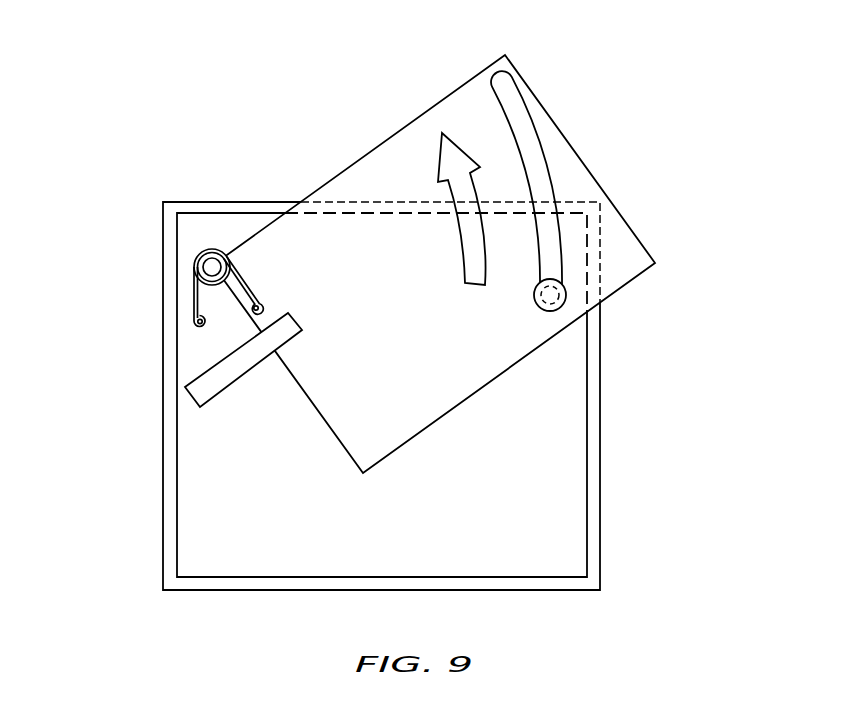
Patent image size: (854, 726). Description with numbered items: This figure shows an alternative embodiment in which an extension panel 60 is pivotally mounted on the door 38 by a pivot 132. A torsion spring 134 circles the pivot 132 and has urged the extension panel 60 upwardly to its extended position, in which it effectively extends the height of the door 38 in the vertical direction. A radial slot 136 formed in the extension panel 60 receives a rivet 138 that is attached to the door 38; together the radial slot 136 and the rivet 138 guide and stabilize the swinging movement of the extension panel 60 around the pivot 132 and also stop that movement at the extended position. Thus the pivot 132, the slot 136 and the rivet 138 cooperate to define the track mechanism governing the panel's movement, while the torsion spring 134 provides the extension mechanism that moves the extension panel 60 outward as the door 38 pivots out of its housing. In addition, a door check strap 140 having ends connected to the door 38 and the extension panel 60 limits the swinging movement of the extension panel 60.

The door 38 is at (567, 465).
The extension panel 60 is at (413, 157).
The pivot 132 is at (212, 249).
The torsion spring 134 is at (190, 303).
The radial slot 136 is at (548, 174).
The rivet 138 is at (554, 296).
The door check strap 140 is at (227, 372).